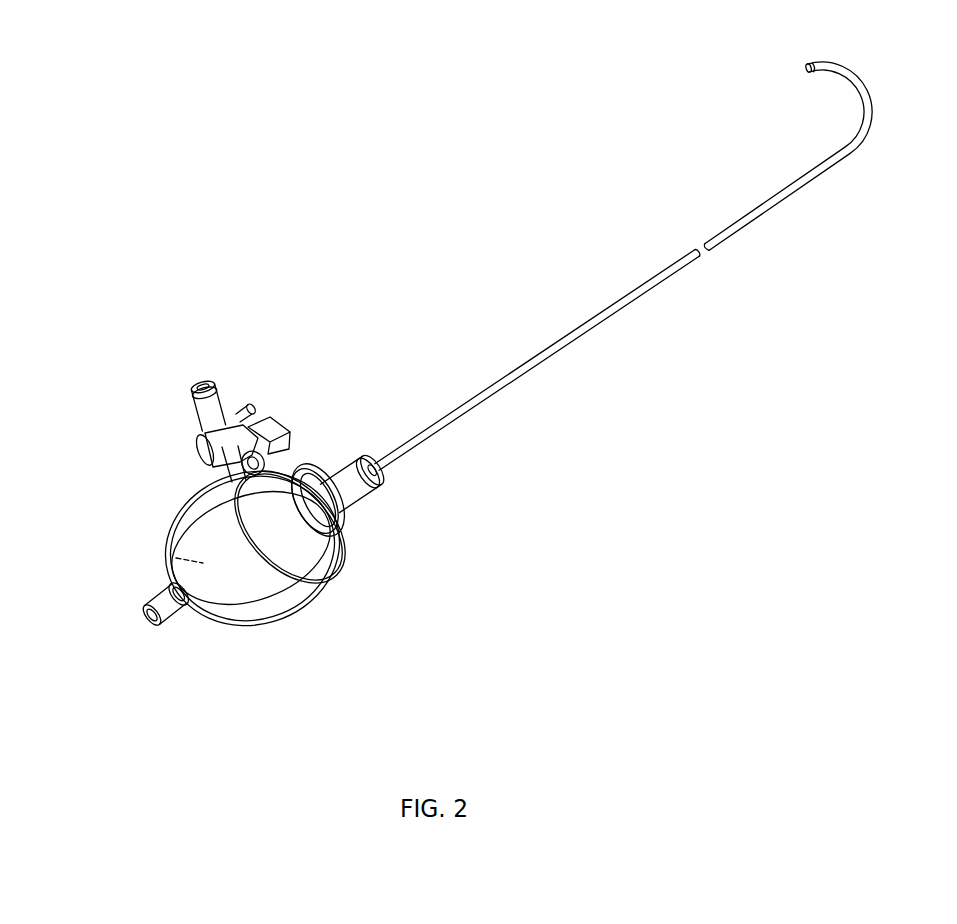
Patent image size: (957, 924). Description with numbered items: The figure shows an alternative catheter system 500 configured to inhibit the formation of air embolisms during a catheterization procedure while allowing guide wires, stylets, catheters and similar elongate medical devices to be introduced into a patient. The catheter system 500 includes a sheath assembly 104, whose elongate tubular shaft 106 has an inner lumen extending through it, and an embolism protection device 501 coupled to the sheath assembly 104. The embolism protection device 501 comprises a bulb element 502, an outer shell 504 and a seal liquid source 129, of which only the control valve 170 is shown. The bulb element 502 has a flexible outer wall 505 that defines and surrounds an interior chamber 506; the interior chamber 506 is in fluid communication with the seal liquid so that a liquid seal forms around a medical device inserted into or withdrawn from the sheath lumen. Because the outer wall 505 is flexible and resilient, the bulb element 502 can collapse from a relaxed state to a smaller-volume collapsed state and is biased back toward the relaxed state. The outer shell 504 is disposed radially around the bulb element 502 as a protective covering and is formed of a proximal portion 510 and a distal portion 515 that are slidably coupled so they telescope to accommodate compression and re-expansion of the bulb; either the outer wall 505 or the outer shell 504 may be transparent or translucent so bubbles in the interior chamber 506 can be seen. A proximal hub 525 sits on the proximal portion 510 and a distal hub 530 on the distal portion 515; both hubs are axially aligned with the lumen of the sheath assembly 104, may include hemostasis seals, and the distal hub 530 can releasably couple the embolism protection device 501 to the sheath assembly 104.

The catheter system 500 is at (423, 33).
The sheath assembly 104 is at (543, 293).
The elongate tubular shaft 106 is at (432, 422).
The seal liquid source 129 is at (211, 407).
The control valve 170 is at (197, 427).
The embolism protection device 501 is at (223, 537).
The bulb element 502 is at (270, 590).
The outer shell 504 is at (248, 623).
The flexible outer wall 505 is at (187, 534).
The interior chamber 506 is at (173, 557).
The proximal portion 510 is at (297, 615).
The distal portion 515 is at (337, 553).
The proximal hub 525 is at (175, 617).
The distal hub 530 is at (358, 497).